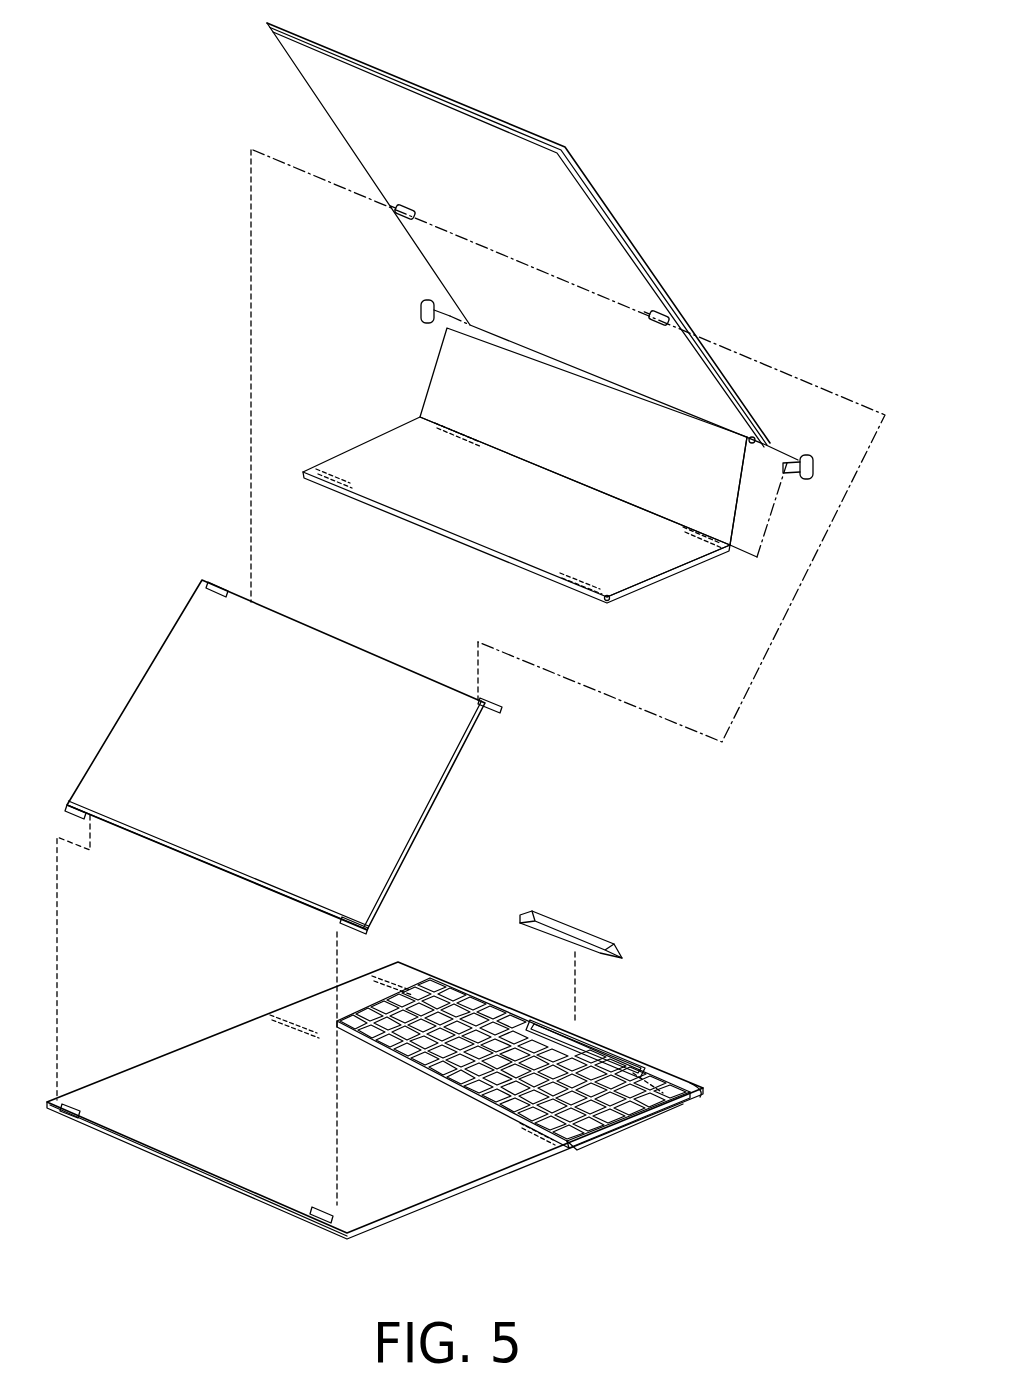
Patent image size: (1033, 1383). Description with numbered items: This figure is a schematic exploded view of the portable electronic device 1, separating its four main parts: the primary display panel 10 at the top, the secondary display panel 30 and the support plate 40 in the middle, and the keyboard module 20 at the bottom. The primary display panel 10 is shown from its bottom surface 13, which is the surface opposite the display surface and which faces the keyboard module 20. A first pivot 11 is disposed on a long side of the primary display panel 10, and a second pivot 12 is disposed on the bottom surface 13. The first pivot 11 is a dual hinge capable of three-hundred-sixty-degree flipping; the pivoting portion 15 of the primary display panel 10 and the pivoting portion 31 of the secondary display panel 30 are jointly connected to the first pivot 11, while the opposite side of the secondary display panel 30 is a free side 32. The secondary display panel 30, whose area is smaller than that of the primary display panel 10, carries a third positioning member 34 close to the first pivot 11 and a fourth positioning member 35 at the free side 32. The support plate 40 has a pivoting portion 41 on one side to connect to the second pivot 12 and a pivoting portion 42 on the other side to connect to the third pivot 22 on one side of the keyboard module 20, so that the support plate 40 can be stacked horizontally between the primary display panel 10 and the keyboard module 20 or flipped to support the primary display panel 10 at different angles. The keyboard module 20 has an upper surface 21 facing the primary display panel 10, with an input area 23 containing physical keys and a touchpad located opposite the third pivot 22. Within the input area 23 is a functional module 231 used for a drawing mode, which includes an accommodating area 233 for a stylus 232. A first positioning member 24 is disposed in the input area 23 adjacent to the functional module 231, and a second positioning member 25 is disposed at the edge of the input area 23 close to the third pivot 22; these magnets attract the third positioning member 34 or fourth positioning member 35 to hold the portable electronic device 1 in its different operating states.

The portable electronic device 1 is at (126, 38).
The primary display panel 10 is at (539, 255).
The first pivot 11 is at (420, 323).
The second pivot 12 is at (402, 218).
The bottom surface 13 is at (345, 112).
The pivoting portion 15 is at (750, 441).
The keyboard module 20 is at (374, 1117).
The upper surface 21 is at (500, 1165).
The third pivot 22 is at (65, 1118).
The input area 23 is at (528, 1072).
The functional module 231 is at (640, 1068).
The stylus 232 is at (590, 935).
The accommodating area 233 is at (587, 1048).
The first positioning member 24 is at (684, 1098).
The second positioning member 25 is at (566, 1142).
The secondary display panel 30 is at (513, 486).
The pivoting portion 31 is at (728, 542).
The free side 32 is at (521, 531).
The third positioning member 34 is at (713, 563).
The fourth positioning member 35 is at (608, 599).
The support plate 40 is at (290, 754).
The pivoting portion 41 is at (205, 580).
The pivoting portion 42 is at (67, 805).